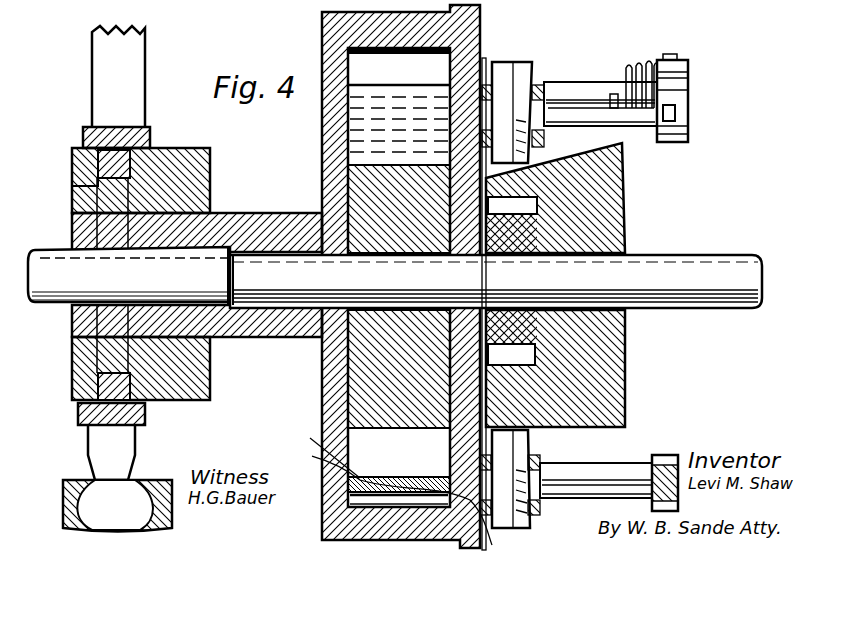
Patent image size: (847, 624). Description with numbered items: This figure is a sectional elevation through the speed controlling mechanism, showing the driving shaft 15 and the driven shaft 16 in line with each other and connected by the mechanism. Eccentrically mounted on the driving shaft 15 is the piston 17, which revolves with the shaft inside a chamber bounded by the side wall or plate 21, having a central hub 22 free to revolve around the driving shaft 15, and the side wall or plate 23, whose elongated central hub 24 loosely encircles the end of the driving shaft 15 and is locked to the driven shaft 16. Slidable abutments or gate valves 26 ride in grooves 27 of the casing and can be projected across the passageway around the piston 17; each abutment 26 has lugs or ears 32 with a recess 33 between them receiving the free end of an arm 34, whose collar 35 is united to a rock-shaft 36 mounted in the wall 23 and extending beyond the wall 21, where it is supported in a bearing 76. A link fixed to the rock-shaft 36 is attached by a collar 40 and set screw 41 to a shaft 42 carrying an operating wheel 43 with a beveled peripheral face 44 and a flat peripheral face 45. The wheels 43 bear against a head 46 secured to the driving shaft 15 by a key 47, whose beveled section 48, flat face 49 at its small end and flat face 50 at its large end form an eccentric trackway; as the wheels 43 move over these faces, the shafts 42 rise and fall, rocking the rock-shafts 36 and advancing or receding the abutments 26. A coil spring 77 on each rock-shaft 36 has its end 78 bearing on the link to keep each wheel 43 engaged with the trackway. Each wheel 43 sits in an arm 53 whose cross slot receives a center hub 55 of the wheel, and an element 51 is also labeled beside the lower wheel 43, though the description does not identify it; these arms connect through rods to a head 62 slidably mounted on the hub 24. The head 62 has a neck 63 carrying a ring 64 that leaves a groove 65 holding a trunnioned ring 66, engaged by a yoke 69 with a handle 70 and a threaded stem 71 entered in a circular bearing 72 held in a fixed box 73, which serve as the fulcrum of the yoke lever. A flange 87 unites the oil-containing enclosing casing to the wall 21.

The driving shaft 15 is at (496, 281).
The driven shaft 16 is at (129, 274).
The piston 17 is at (365, 193).
The side wall or plate 21 is at (486, 47).
The central hub 22 is at (507, 250).
The side wall or plate 23 is at (322, 135).
The elongated central hub 24 is at (268, 224).
The slidable abutment or gate valve 26 is at (399, 300).
The groove 27 is at (399, 61).
The lugs or ears 32 is at (323, 450).
The recess 33 is at (397, 498).
The arm 34 is at (398, 478).
The collar 35 is at (399, 78).
The rock-shaft 36 is at (586, 84).
The collar 40 is at (690, 118).
The set screw 41 is at (672, 143).
The shaft 42 is at (601, 113).
The operating wheel 43 is at (530, 66).
The beveled peripheral face 44 is at (548, 60).
The flat peripheral face 45 is at (620, 450).
The head 46 is at (572, 285).
The key 47 is at (626, 251).
The beveled section 48 is at (626, 186).
The flat peripheral face 49 is at (626, 200).
The flat peripheral face 50 is at (630, 146).
The collar 51 is at (545, 453).
The arm 53 is at (546, 86).
The center hub 55 is at (546, 128).
The head 62 is at (202, 152).
The neck 63 is at (72, 209).
The ring 64 is at (80, 172).
The groove 65 is at (135, 164).
The ring 66 is at (85, 139).
The yoke 69 is at (92, 125).
The handle 70 is at (118, 76).
The threaded stem 71 is at (130, 481).
The circular bearing 72 is at (92, 478).
The box 73 is at (68, 508).
The bearing 76 is at (552, 58).
The coil spring 77 is at (648, 66).
The spring end 78 is at (661, 60).
The flange 87 is at (488, 5).